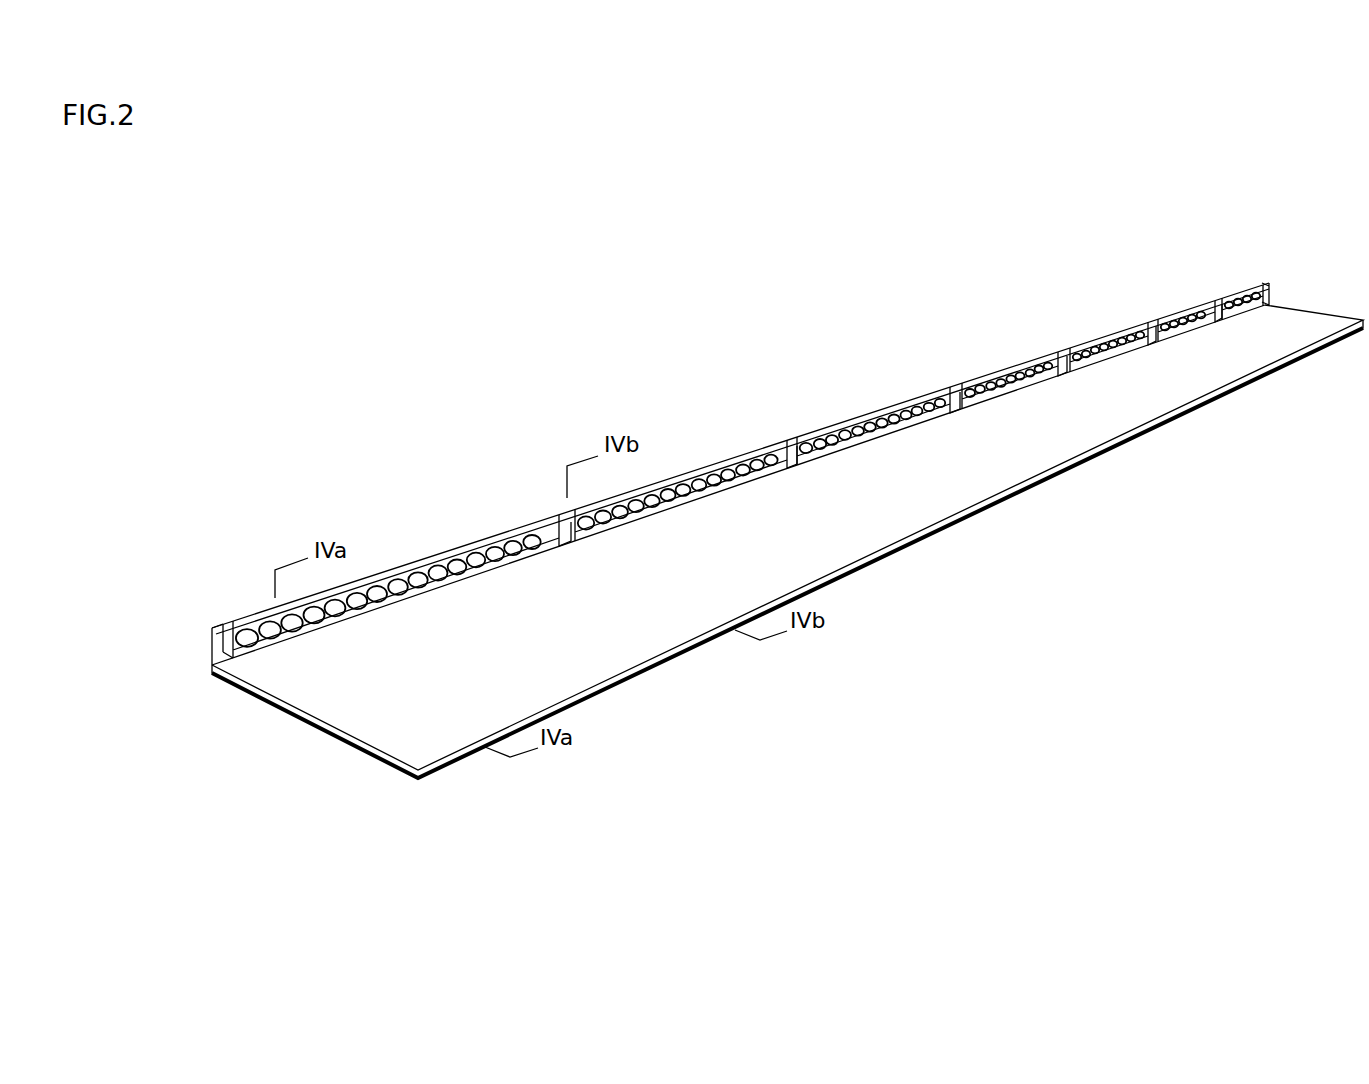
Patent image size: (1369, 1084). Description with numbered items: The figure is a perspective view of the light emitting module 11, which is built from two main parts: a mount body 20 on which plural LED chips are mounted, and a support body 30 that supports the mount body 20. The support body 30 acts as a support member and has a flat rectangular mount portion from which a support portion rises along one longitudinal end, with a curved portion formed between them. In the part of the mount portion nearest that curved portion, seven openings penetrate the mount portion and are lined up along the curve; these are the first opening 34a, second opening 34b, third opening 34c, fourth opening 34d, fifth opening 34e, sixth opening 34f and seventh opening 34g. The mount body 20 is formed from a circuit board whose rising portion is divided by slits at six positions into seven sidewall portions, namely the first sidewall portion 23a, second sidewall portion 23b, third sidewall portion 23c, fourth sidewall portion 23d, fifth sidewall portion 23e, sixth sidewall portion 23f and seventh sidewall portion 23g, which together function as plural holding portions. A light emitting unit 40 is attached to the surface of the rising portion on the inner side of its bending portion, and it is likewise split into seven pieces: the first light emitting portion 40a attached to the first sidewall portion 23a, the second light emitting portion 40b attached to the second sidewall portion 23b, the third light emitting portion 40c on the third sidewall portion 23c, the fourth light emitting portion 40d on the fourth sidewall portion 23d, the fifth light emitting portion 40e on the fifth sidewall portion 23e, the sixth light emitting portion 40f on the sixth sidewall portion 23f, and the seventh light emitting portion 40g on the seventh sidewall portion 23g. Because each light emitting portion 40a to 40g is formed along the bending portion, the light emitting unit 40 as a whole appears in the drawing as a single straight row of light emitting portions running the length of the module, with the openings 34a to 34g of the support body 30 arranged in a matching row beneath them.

The light emitting module 11 is at (797, 316).
The mount body 20 is at (1030, 496).
The support body 30 is at (1105, 425).
The light emitting unit 40 is at (226, 644).
The first opening 34a is at (470, 575).
The second opening 34b is at (655, 512).
The third opening 34c is at (858, 440).
The fourth opening 34d is at (1000, 390).
The fifth opening 34e is at (1105, 354).
The sixth opening 34f is at (1178, 330).
The seventh opening 34g is at (1238, 307).
The first light emitting portion 40a is at (438, 572).
The second light emitting portion 40b is at (735, 470).
The third light emitting portion 40c is at (858, 430).
The fourth light emitting portion 40d is at (985, 400).
The fifth light emitting portion 40e is at (1090, 355).
The sixth light emitting portion 40f is at (1185, 326).
The seventh light emitting portion 40g is at (1242, 302).
The first sidewall portion 23a is at (558, 520).
The second sidewall portion 23b is at (786, 447).
The third sidewall portion 23c is at (945, 400).
The fourth sidewall portion 23d is at (1055, 365).
The fifth sidewall portion 23e is at (1140, 335).
The sixth sidewall portion 23f is at (1210, 310).
The seventh sidewall portion 23g is at (1258, 290).